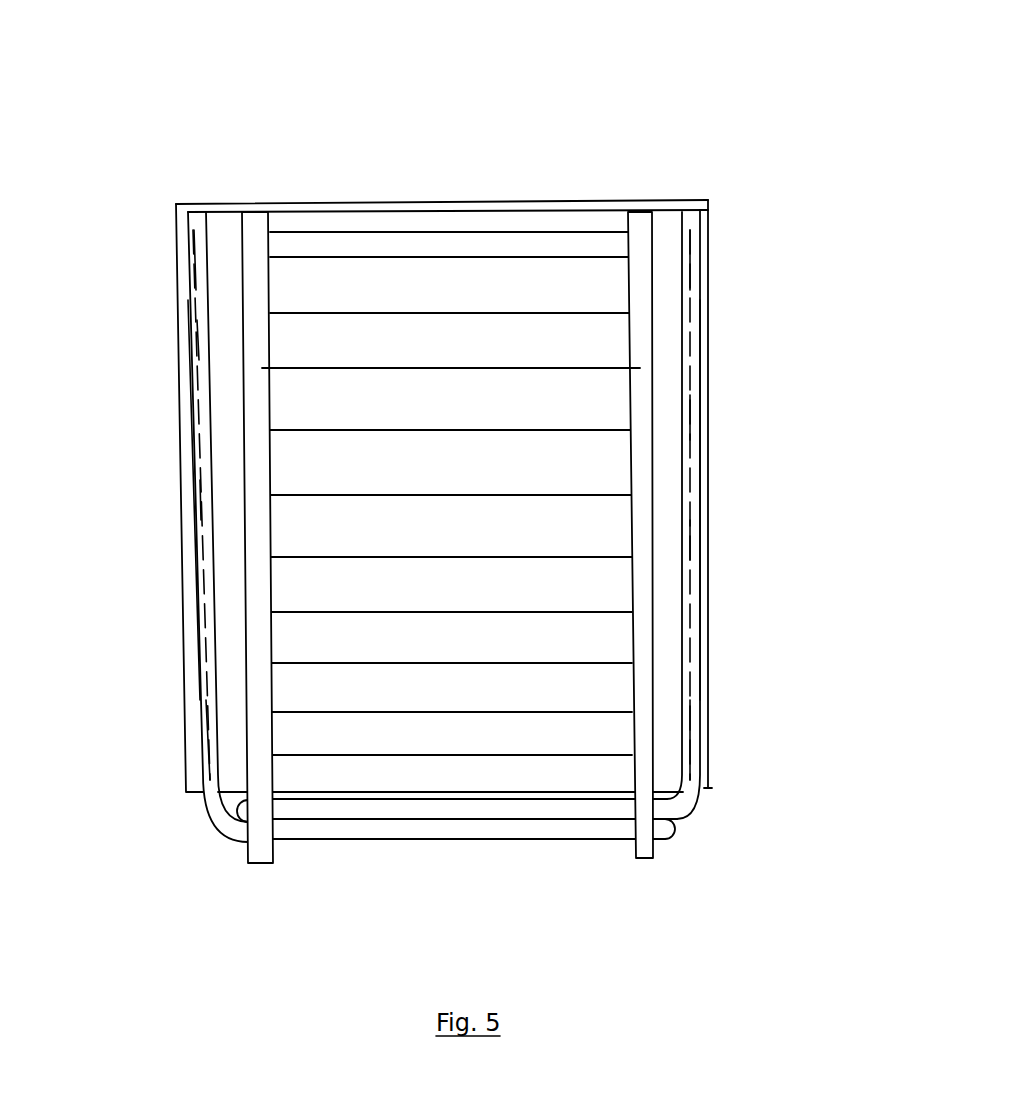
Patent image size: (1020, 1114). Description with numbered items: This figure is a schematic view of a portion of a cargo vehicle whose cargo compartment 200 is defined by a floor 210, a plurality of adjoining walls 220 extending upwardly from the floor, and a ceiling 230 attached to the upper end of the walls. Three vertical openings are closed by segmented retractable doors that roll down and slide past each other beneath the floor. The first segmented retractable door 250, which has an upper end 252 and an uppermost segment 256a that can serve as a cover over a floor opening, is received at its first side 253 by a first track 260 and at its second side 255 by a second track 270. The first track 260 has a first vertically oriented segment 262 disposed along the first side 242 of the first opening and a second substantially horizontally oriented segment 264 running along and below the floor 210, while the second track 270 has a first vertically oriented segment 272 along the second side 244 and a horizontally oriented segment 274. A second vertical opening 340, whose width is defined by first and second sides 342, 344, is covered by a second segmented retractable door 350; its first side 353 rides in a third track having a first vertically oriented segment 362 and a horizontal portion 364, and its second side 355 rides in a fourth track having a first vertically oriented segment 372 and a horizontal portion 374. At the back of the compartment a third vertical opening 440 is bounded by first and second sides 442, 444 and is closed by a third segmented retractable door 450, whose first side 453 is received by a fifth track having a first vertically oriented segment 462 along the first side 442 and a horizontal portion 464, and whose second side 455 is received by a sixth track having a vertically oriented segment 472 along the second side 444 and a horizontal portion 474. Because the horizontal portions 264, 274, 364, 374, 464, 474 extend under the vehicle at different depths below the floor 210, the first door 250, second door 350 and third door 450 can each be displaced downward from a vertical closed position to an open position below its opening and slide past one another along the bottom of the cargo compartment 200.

The cargo compartment 200 is at (512, 102).
The floor 210 is at (663, 787).
The plurality of adjoining walls 220 is at (180, 694).
The ceiling 230 is at (400, 206).
The first side 242 is at (450, 493).
The second side 244 is at (574, 691).
The first segmented retractable door 250 is at (451, 493).
The upper end 252 is at (530, 253).
The first side 253 is at (278, 688).
The second side 255 is at (634, 676).
The uppermost segment 256a is at (578, 267).
The first track 260 is at (299, 512).
The first vertically oriented segment 262 is at (299, 512).
The second substantially horizontally oriented segment 264 is at (263, 230).
The second track 270 is at (736, 507).
The first vertically oriented segment 272 is at (736, 507).
The second substantially horizontally oriented segment 274 is at (637, 237).
The second vertical opening 340 is at (672, 579).
The first side 342 is at (783, 500).
The second side 344 is at (708, 490).
The second segmented retractable door 350 is at (700, 547).
The first side 353 is at (765, 424).
The second side 355 is at (690, 423).
The first vertically oriented segment 362 is at (774, 259).
The horizontal portion 364 is at (584, 814).
The first vertically oriented segment 372 is at (705, 267).
The horizontal portion 374 is at (478, 808).
The third vertical opening 440 is at (252, 579).
The first side 442 is at (131, 500).
The second side 444 is at (178, 378).
The third segmented retractable door 450 is at (182, 500).
The first latch pin end 453 is at (131, 360).
The second side 455 is at (202, 330).
The first vertically oriented segment 462 is at (139, 290).
The horizontal portion 464 is at (325, 814).
The first upper rod end 472 is at (194, 283).
The horizontal portion 474 is at (352, 831).